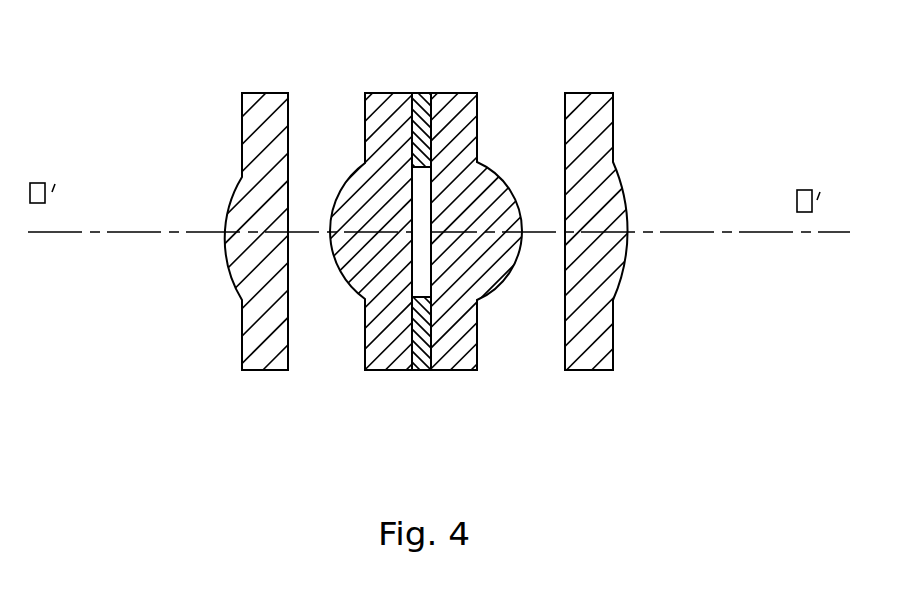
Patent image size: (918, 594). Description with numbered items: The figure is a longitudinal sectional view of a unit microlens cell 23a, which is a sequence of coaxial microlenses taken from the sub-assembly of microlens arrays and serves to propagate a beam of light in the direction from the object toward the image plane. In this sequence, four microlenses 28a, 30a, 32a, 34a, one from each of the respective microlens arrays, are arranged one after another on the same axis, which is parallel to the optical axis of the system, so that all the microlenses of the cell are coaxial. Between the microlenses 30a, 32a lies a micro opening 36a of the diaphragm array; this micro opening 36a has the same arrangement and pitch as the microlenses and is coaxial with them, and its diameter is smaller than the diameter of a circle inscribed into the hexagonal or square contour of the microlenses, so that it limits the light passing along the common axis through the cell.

The unit microlens cell 23a is at (492, 402).
The microlens 28a is at (235, 178).
The microlens 30a is at (335, 195).
The microlens 32a is at (503, 177).
The microlens 34a is at (622, 180).
The micro opening 36a is at (420, 280).